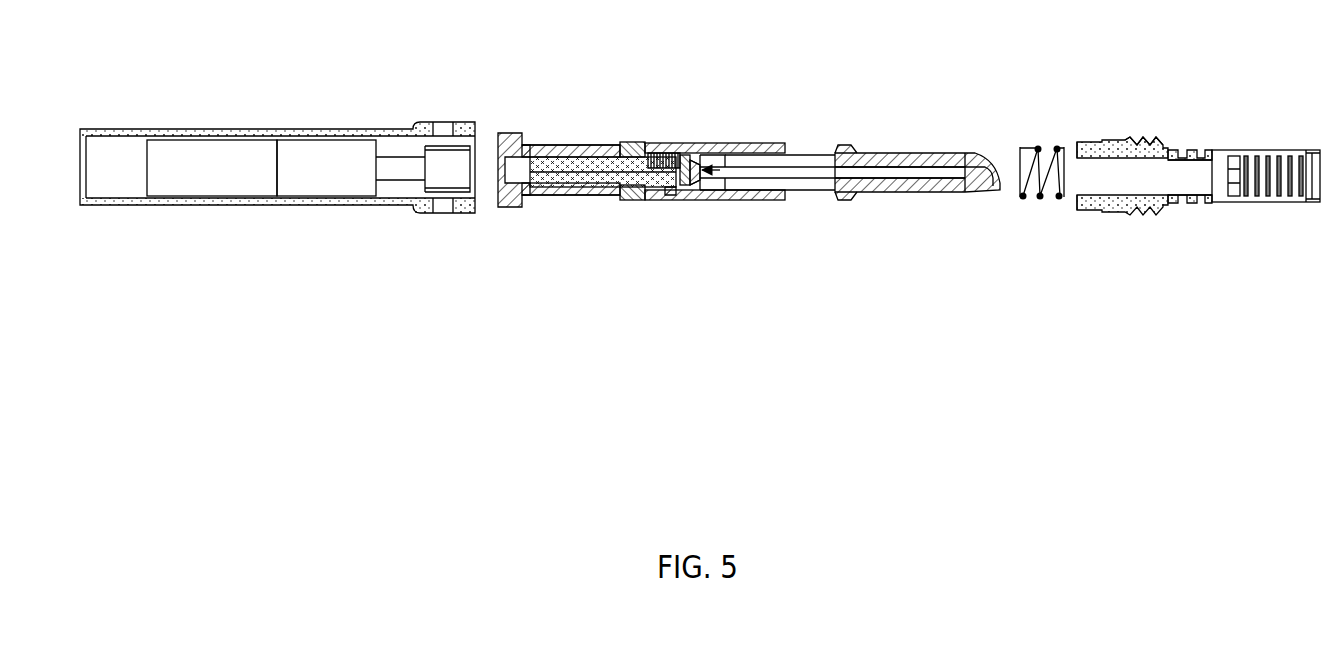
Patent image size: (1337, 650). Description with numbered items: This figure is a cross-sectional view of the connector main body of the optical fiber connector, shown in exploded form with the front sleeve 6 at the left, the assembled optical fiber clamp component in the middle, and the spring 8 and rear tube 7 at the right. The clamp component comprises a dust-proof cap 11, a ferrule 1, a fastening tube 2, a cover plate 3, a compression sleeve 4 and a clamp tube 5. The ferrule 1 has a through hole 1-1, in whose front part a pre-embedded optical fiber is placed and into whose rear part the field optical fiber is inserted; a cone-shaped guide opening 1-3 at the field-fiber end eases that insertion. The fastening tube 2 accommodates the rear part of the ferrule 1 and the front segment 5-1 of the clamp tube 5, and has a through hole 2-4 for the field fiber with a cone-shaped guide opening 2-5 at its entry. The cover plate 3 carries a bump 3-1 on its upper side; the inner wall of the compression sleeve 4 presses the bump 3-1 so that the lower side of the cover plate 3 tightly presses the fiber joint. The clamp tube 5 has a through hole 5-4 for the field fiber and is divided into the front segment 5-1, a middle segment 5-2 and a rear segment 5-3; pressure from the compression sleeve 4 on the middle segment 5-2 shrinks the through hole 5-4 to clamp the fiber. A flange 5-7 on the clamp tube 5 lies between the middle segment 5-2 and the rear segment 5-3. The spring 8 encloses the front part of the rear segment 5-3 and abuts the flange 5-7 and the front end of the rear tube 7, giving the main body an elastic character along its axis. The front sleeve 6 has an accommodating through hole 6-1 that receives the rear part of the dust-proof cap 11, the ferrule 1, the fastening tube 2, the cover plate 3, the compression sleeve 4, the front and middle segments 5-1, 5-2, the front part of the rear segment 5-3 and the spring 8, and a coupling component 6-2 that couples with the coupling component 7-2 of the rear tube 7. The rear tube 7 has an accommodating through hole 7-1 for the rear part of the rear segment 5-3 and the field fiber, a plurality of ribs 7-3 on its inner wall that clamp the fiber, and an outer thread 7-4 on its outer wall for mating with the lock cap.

The ferrule 1 is at (559, 196).
The through hole 1-1 is at (582, 176).
The guide opening 1-3 is at (676, 190).
The fastening tube 2 is at (634, 200).
The through hole 2-4 is at (690, 152).
The guide opening 2-5 is at (725, 153).
The cover plate 3 is at (665, 152).
The bump 3-1 is at (652, 150).
The compression sleeve 4 is at (750, 200).
The clamp tube 5 is at (879, 195).
The front segment 5-1 is at (707, 184).
The middle segment 5-2 is at (800, 186).
The rear segment 5-3 is at (926, 190).
The through hole 5-4 is at (797, 167).
The flange 5-7 is at (849, 147).
The front sleeve 6 is at (272, 213).
The accommodating through hole 6-1 is at (226, 168).
The coupling component 6-2 is at (443, 130).
The rear tube 7 is at (1176, 212).
The accommodating through hole 7-1 is at (1173, 173).
The coupling component 7-2 is at (1100, 141).
The ribs 7-3 is at (1268, 160).
The outer thread 7-4 is at (1136, 140).
The spring 8 is at (1043, 212).
The dust-proof cap 11 is at (514, 200).